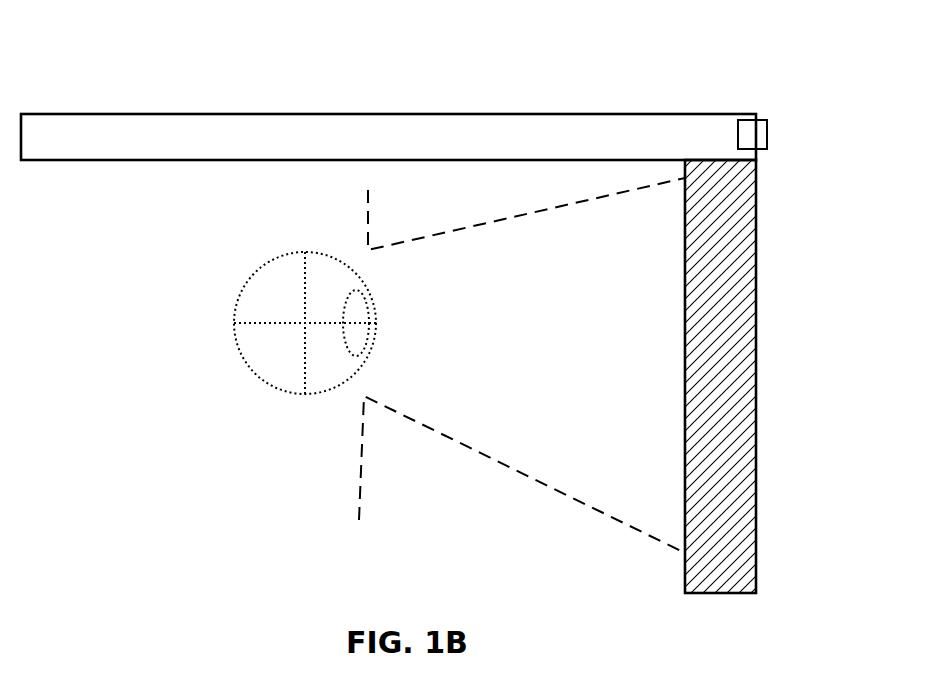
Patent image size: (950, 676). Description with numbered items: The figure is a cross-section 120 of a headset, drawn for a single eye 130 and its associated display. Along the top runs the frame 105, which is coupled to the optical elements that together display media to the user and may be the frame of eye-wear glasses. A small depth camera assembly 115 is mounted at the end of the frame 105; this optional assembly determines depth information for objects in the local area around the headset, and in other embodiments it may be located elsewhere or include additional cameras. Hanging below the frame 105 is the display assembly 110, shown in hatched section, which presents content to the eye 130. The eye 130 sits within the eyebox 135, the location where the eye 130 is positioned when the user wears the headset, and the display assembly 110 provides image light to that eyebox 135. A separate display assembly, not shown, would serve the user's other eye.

The cross-section 120 is at (92, 68).
The frame 105 is at (600, 114).
The depth camera assembly 115 is at (753, 137).
The display assembly 110 is at (710, 248).
The eye 130 is at (268, 263).
The eyebox 135 is at (365, 412).